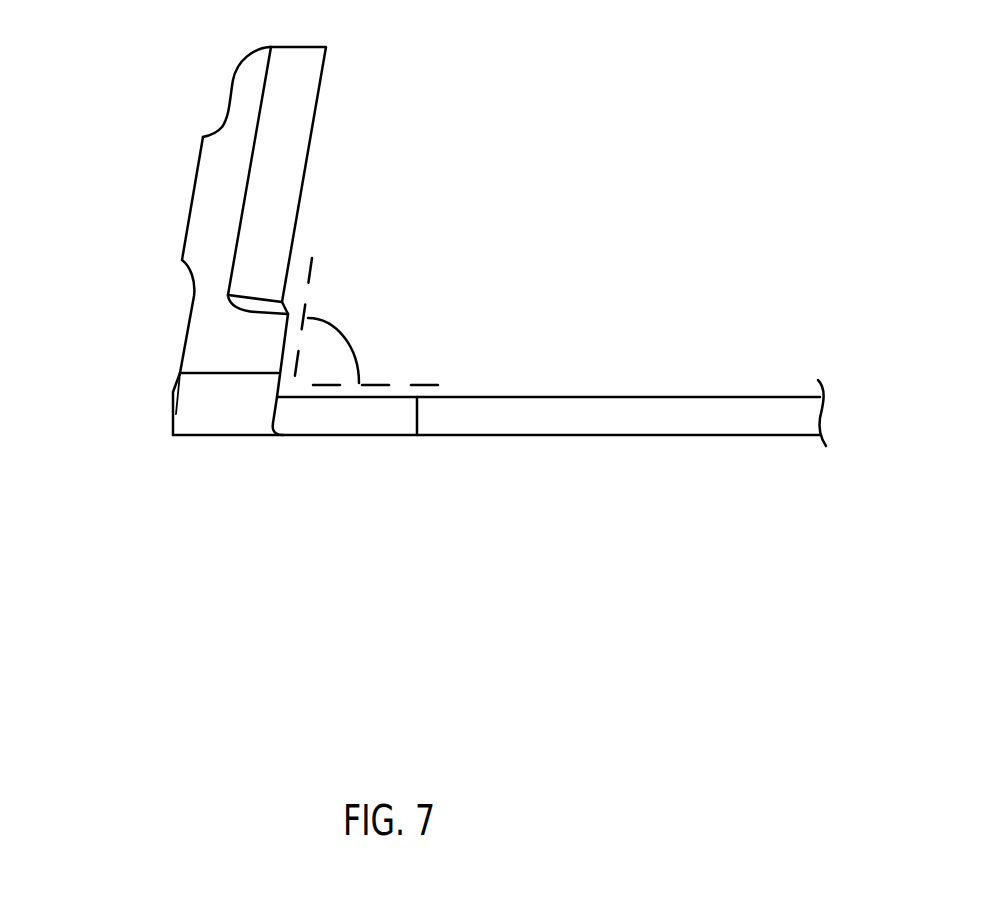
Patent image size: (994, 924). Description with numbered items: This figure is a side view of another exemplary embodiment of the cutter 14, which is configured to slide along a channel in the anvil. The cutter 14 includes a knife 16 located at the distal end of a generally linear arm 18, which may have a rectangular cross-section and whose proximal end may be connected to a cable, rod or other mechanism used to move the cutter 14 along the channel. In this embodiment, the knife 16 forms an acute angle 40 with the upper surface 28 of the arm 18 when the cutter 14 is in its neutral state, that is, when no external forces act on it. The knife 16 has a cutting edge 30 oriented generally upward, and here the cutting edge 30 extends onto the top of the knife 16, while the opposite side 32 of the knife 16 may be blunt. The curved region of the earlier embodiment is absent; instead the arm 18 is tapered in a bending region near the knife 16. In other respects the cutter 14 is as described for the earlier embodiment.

The cutter 14 is at (612, 219).
The knife 16 is at (98, 198).
The arm 18 is at (693, 445).
The upper surface of the arm 28 is at (590, 397).
The cutting edge 30 is at (310, 142).
The opposite side of the knife 32 is at (200, 153).
The acute angle 40 is at (345, 340).